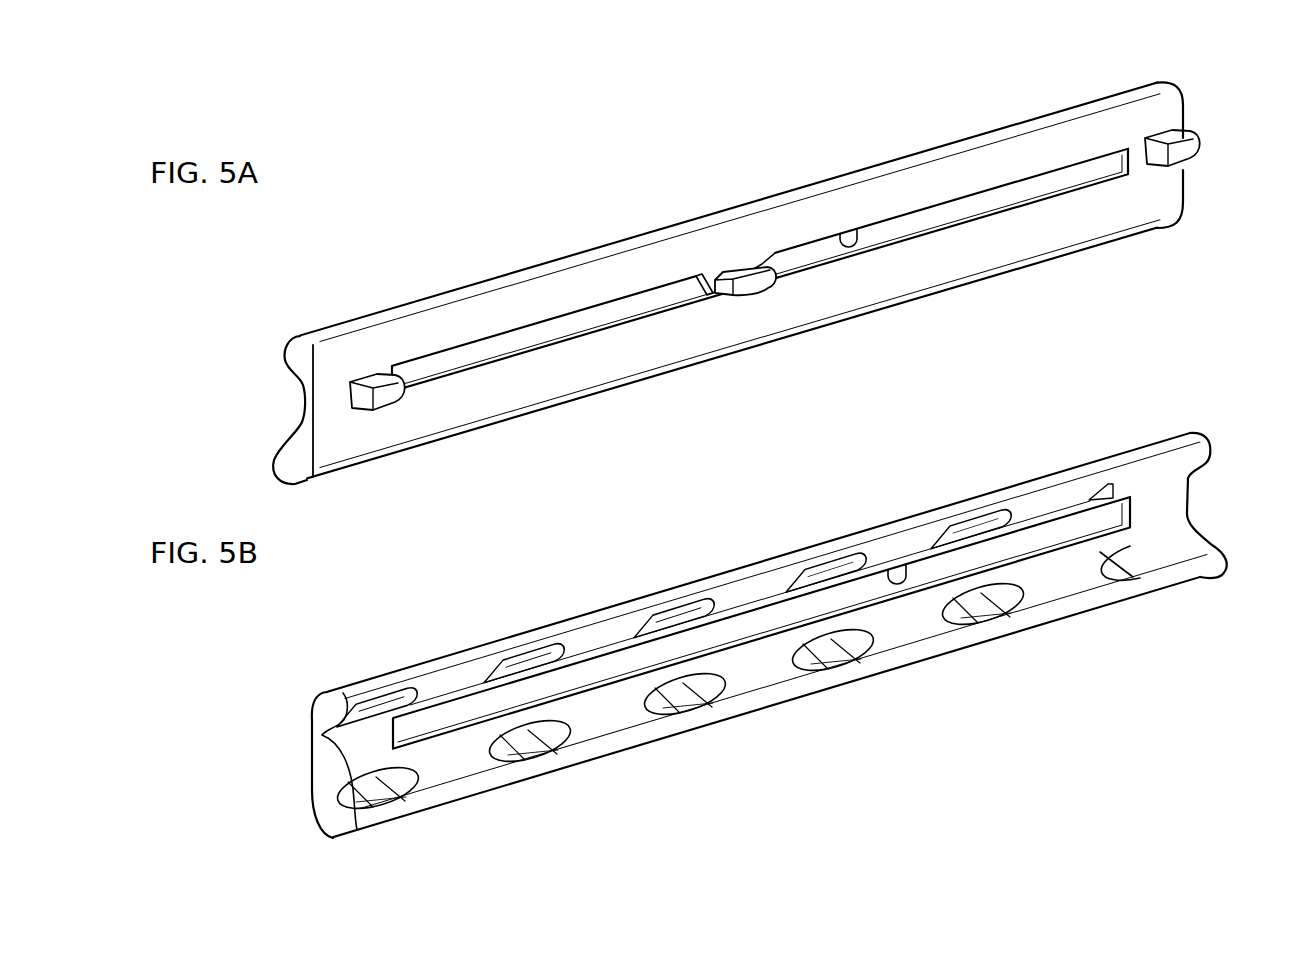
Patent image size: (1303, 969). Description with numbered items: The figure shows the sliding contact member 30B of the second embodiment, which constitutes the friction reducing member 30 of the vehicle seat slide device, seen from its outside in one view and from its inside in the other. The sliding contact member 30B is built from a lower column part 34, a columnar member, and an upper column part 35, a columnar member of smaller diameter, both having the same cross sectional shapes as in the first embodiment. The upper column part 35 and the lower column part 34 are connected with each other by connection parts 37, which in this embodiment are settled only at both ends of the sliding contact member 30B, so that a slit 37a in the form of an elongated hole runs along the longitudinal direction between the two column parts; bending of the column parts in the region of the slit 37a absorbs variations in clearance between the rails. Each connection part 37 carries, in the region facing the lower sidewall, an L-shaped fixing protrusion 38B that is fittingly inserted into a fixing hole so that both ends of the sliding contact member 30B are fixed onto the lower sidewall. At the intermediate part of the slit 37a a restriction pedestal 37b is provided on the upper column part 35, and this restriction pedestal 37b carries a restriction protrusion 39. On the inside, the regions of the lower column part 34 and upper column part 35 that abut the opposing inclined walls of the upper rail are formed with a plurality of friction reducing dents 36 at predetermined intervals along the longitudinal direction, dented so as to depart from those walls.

In FIG. 5A, the friction reducing member 30 is at (367, 313).
In FIG. 5B, the friction reducing member 30 is at (356, 680).
In FIG. 5A, the sliding contact member 30B is at (775, 264).
In FIG. 5B, the sliding contact member 30B is at (752, 641).
In FIG. 5A, the lower column part 34 is at (503, 407).
In FIG. 5B, the lower column part 34 is at (752, 700).
In FIG. 5A, the upper column part 35 is at (500, 281).
In FIG. 5B, the upper column part 35 is at (452, 672).
In FIG. 5B, the friction reducing dents 36 is at (533, 660).
In FIG. 5A, the connection part 37 is at (1141, 138).
In FIG. 5B, the connection part 37 is at (353, 748).
In FIG. 5A, the slit 37a is at (847, 246).
In FIG. 5B, the slit 37a is at (904, 582).
In FIG. 5A, the restriction pedestal 37b is at (717, 272).
In FIG. 5A, the fixing protrusion 38B is at (383, 391).
In FIG. 5A, the restriction protrusion 39 is at (757, 288).